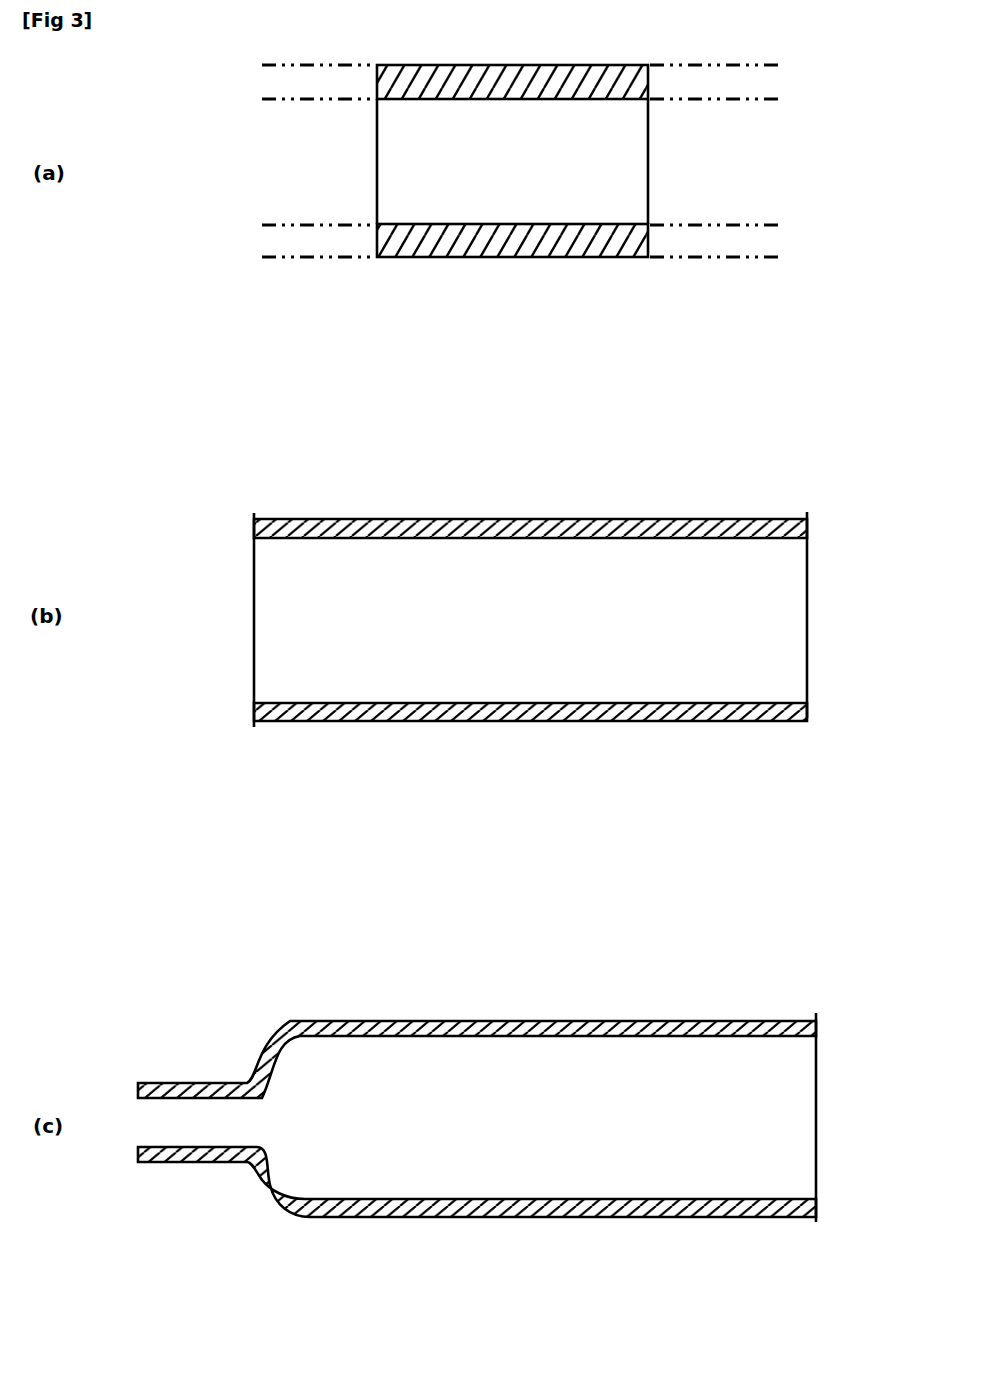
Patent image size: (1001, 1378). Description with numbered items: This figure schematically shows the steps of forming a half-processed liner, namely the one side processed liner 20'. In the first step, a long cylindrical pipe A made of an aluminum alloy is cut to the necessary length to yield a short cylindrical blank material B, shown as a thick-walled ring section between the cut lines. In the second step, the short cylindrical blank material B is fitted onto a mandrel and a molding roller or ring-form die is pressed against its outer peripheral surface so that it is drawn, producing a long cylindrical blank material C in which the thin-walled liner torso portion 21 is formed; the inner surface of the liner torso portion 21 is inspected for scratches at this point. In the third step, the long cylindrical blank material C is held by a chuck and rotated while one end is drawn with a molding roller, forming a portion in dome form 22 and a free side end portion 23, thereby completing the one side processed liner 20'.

The one side processed liner 20' is at (477, 895).
The liner torso portion 21 is at (477, 856).
The portion in dome form 22 is at (262, 1043).
The free side end portion 23 is at (168, 1163).
The long cylindrical pipe A is at (703, 249).
The short cylindrical blank material B is at (497, 268).
The long cylindrical blank material C is at (495, 738).